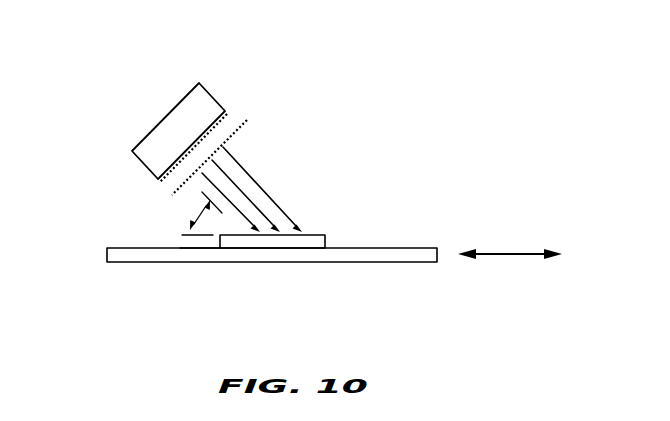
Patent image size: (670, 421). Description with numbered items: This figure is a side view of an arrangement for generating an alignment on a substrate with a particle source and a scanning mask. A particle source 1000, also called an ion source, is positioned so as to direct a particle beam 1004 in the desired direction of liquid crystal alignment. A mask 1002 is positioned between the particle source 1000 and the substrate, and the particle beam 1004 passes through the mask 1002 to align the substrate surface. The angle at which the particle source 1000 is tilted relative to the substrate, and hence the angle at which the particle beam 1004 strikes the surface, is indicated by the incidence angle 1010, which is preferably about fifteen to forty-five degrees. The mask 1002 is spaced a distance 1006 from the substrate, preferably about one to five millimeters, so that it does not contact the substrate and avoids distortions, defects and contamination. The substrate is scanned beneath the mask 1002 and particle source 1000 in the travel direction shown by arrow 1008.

The particle source 1000 is at (242, 106).
The particle beam 1004 is at (253, 178).
The incidence angle 1010 is at (200, 214).
The distance 1006 is at (220, 245).
The mask 1002 is at (243, 245).
The arrow 1008 is at (510, 255).